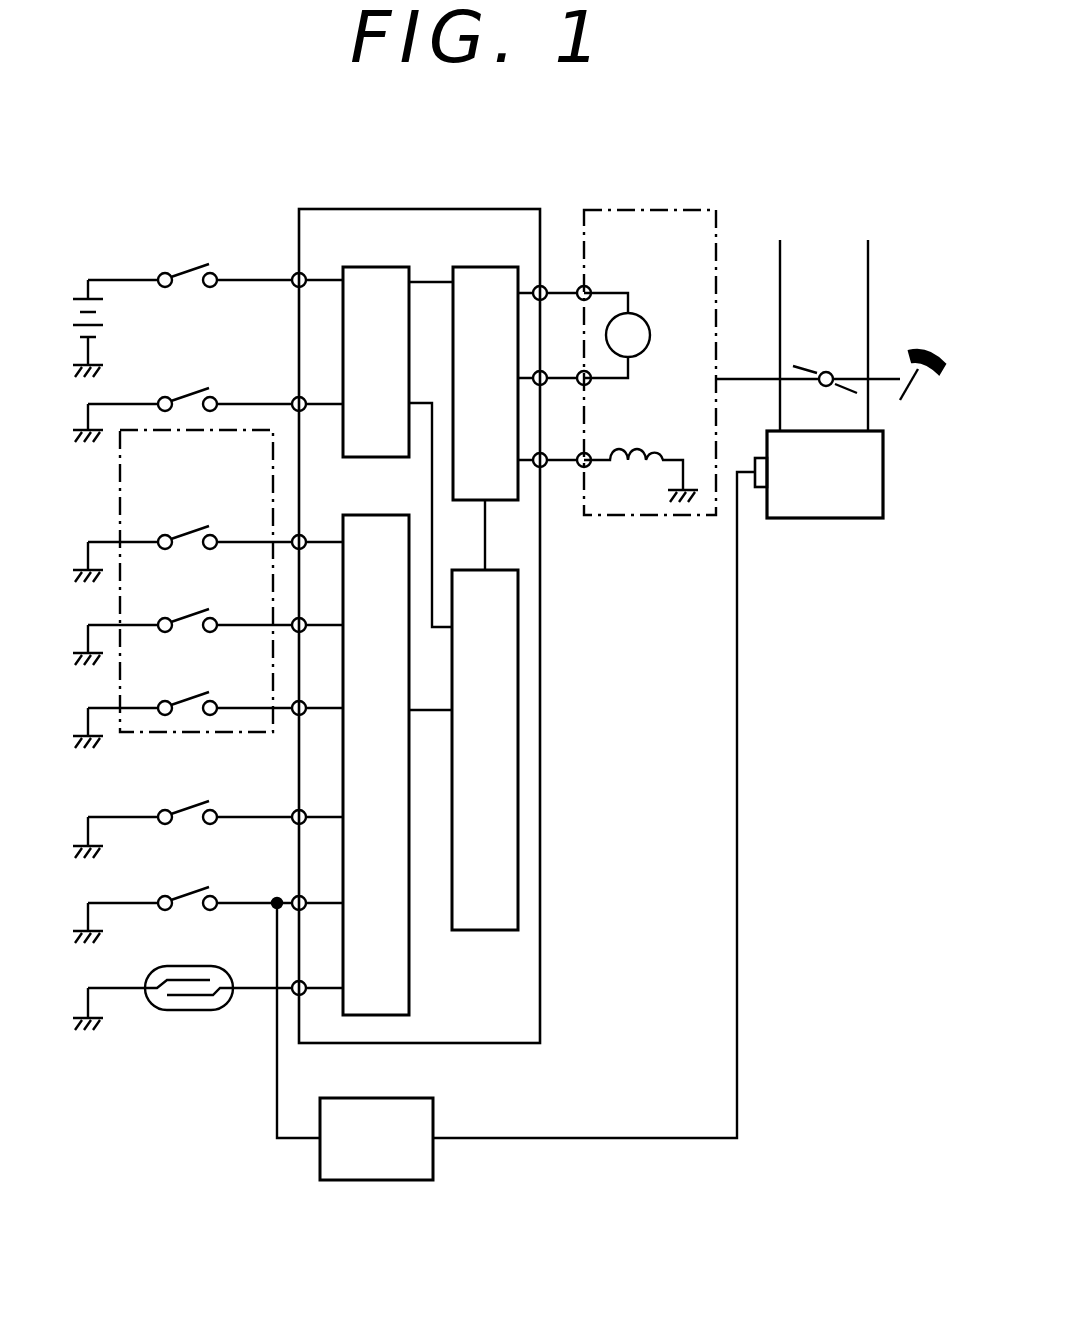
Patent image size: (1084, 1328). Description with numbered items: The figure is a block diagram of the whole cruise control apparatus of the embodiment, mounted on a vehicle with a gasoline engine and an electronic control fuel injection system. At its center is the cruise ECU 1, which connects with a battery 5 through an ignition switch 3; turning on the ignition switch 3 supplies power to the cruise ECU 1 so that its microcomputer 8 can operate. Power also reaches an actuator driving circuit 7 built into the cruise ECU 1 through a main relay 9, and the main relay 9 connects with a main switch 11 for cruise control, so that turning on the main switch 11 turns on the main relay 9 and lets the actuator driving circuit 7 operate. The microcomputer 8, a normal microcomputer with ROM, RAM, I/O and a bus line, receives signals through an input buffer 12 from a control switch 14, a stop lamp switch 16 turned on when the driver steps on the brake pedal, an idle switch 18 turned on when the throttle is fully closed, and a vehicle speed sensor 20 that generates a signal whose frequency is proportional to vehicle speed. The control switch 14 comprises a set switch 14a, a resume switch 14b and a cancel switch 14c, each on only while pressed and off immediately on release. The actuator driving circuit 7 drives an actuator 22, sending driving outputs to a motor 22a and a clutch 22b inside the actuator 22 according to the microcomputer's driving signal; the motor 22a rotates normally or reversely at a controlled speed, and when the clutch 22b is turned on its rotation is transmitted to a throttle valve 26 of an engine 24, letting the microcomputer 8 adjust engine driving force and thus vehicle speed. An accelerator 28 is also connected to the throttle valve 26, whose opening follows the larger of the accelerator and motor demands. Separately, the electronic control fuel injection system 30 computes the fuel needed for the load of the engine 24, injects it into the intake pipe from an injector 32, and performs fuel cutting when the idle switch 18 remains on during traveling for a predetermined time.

The cruise ECU 1 is at (496, 209).
The ignition switch 3 is at (175, 272).
The battery 5 is at (106, 318).
The actuator driving circuit 7 is at (502, 502).
The microcomputer 8 is at (492, 931).
The main relay 9 is at (380, 458).
The main switch 11 is at (188, 395).
The input buffer 12 is at (410, 988).
The control switch 14 is at (118, 481).
The set switch 14a is at (181, 536).
The resume switch 14b is at (182, 619).
The cancel switch 14c is at (184, 702).
The stop lamp switch 16 is at (185, 810).
The idle switch 18 is at (188, 893).
The vehicle speed sensor 20 is at (183, 964).
The actuator 22 is at (672, 209).
The motor 22a is at (650, 320).
The clutch 22b is at (650, 447).
The engine 24 is at (884, 497).
The throttle valve 26 is at (808, 365).
The accelerator 28 is at (920, 347).
The electronic control fuel injection system 30 is at (433, 1110).
The injector 32 is at (760, 490).